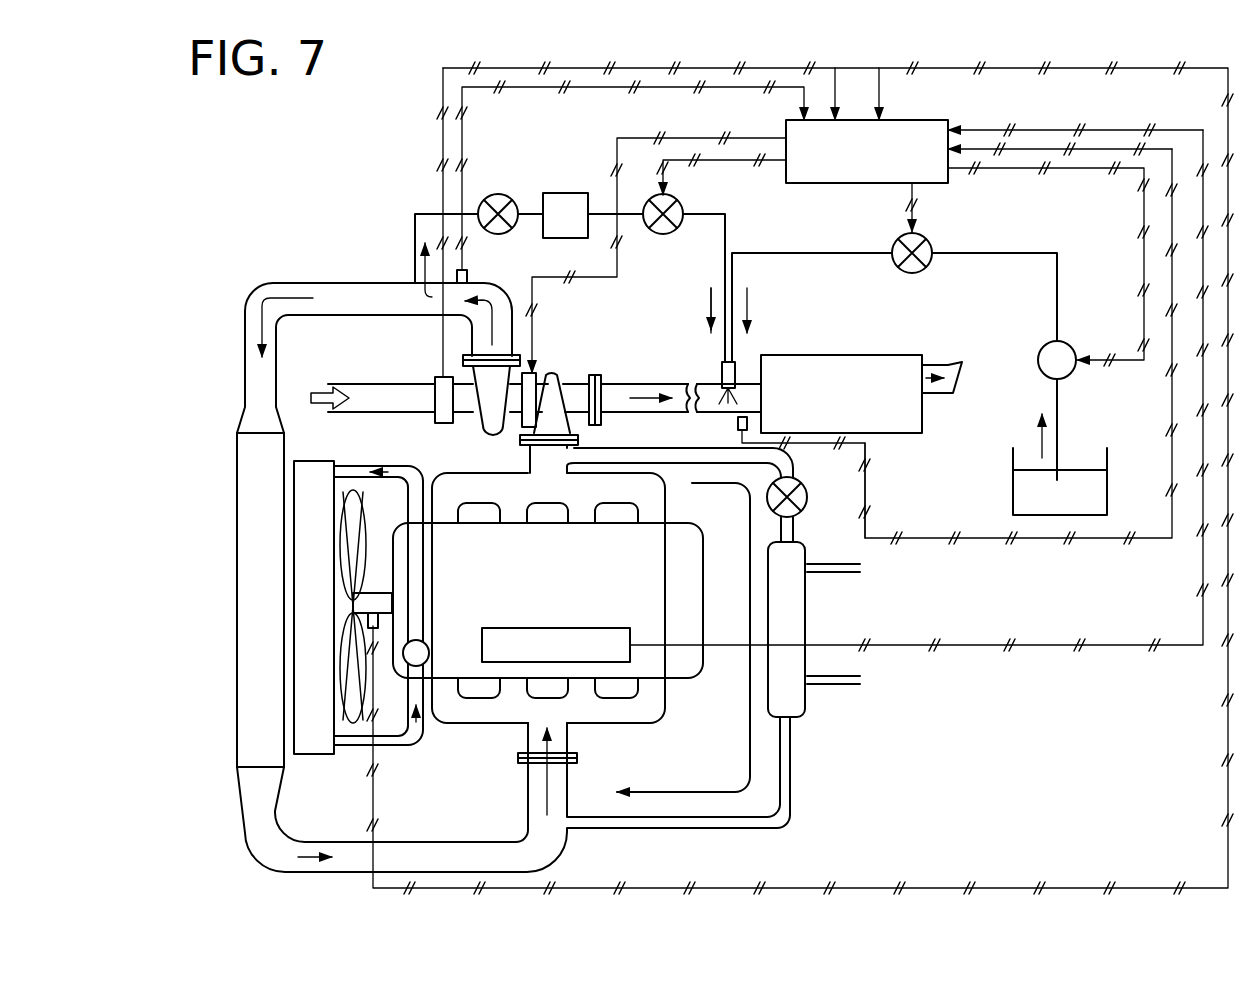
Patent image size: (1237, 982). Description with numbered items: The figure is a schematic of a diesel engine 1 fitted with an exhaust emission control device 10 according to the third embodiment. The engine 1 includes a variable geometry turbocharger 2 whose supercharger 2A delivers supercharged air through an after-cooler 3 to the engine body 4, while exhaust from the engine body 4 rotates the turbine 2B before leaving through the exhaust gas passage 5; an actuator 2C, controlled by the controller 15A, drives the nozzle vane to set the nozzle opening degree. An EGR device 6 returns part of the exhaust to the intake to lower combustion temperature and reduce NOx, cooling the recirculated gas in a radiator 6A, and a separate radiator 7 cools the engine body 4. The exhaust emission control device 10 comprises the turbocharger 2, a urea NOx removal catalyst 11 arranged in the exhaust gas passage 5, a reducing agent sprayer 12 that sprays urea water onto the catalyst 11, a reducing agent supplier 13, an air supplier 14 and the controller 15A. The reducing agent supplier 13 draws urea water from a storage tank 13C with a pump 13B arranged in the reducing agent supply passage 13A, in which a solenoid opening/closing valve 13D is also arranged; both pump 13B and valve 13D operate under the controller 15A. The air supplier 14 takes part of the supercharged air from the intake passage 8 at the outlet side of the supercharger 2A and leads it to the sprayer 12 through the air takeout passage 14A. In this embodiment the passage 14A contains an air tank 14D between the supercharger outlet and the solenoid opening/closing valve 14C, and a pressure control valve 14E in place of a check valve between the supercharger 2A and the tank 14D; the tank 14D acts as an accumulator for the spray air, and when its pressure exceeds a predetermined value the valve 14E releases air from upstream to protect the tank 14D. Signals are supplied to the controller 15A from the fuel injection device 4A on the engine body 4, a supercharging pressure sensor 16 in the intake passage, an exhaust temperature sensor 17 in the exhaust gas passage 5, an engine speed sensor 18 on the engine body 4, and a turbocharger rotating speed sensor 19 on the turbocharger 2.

The diesel engine 1 is at (218, 182).
The variable geometry turbocharger 2 is at (413, 355).
The supercharger 2A is at (488, 405).
The turbine 2B is at (555, 403).
The actuator 2C is at (532, 393).
The after-cooler 3 is at (245, 640).
The engine body 4 is at (690, 678).
The fuel injection device 4A is at (570, 628).
The exhaust gas passage 5 is at (748, 357).
The EGR device 6 is at (812, 613).
The radiator 6A is at (800, 714).
The radiator 7 is at (320, 755).
The intake passage 8 is at (330, 312).
The exhaust emission control device 10 is at (880, 447).
The urea NOx removal catalyst 11 is at (905, 433).
The reducing agent sprayer 12 is at (722, 372).
The reducing agent supplier 13 is at (997, 268).
The reducing agent supply passage 13A is at (1030, 253).
The pump 13B is at (1070, 374).
The storage tank 13C is at (1107, 490).
The solenoid opening/closing valve 13D is at (893, 243).
The air supplier 14 is at (532, 173).
The air takeout passage 14A is at (415, 237).
The solenoid opening/closing valve 14C is at (683, 212).
The air tank 14D is at (563, 203).
The pressure control valve 14E is at (479, 205).
The controller 15A is at (905, 120).
The supercharging pressure sensor 16 is at (467, 278).
The exhaust temperature sensor 17 is at (738, 426).
The engine speed sensor 18 is at (367, 618).
The turbocharger rotating speed sensor 19 is at (442, 397).